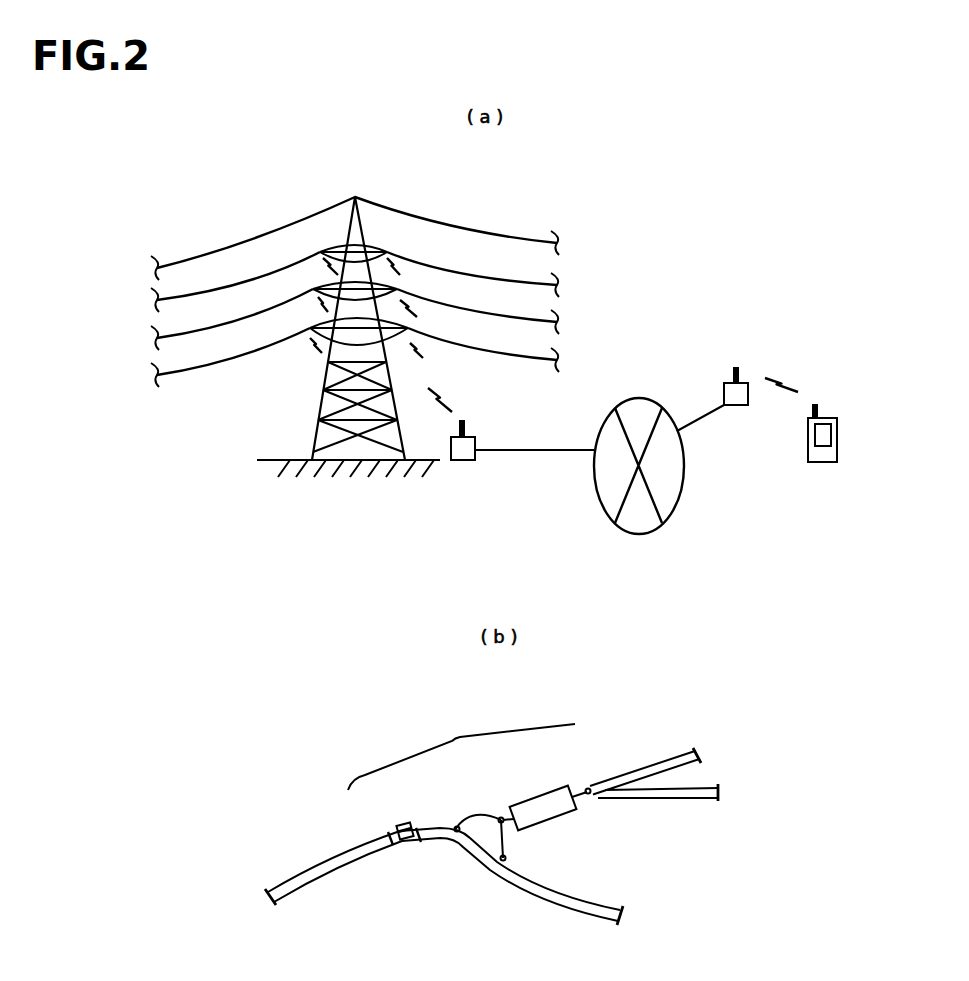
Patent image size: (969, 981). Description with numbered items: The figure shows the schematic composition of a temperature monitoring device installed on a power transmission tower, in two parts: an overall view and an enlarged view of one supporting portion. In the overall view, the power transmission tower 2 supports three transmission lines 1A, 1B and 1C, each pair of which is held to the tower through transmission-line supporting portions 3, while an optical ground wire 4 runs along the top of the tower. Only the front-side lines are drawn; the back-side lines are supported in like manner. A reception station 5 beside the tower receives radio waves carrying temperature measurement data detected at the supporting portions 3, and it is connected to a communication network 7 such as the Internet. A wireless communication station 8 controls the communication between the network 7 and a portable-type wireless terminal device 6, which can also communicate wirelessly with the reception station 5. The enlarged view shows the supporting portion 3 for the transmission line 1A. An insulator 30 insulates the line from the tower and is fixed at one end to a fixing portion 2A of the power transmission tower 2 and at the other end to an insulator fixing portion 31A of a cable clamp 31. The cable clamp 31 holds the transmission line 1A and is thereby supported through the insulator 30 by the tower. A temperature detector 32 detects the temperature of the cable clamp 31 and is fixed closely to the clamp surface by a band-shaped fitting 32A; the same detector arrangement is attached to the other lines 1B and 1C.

The optical ground wire 4 is at (210, 256).
The transmission line 1A is at (209, 295).
The transmission line 1B is at (208, 333).
The transmission line 1C is at (206, 370).
The transmission-line supporting portion 3 is at (320, 252).
The power transmission tower 2 is at (322, 402).
The fixing portion 2A is at (590, 788).
The reception station 5 is at (475, 437).
The communication network 7 is at (684, 465).
The wireless communication station 8 is at (736, 405).
The portable-type wireless terminal device 6 is at (837, 448).
The insulator 30 is at (551, 814).
The cable clamp 31 is at (458, 824).
The insulator fixing portion 31A is at (502, 820).
The temperature detector 32 is at (405, 822).
The band-shaped fitting 32A is at (403, 846).